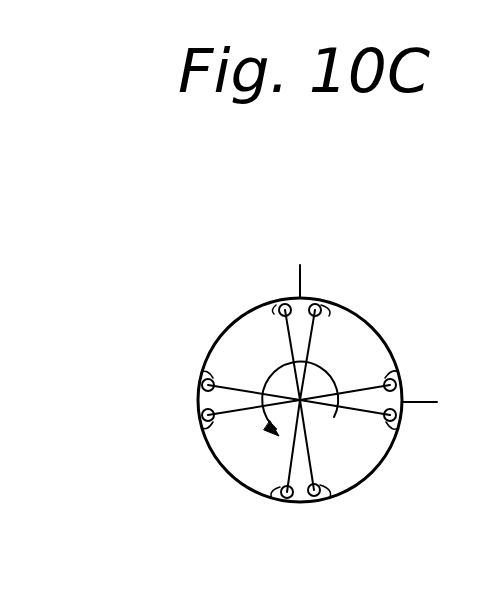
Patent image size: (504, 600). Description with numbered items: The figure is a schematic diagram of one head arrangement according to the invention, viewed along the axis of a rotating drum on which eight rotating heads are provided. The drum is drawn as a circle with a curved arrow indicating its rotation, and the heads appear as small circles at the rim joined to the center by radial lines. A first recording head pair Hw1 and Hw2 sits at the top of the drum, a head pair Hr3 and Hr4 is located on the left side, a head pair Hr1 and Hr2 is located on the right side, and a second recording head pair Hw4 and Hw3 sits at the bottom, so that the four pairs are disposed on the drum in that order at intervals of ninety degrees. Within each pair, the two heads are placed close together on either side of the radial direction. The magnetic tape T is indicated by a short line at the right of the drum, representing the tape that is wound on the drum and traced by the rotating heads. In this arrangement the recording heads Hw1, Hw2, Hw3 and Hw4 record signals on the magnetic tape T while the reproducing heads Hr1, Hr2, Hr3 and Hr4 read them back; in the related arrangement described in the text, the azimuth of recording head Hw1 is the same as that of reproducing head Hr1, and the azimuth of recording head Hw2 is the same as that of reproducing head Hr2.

The recording head Hw1 is at (273, 308).
The recording head Hw2 is at (345, 310).
The recording head Hw3 is at (342, 493).
The recording head Hw4 is at (270, 500).
The reproducing head Hr1 is at (398, 352).
The reproducing head Hr2 is at (393, 442).
The reproducing head Hr3 is at (207, 440).
The reproducing head Hr4 is at (206, 364).
The magnetic tape T is at (431, 402).